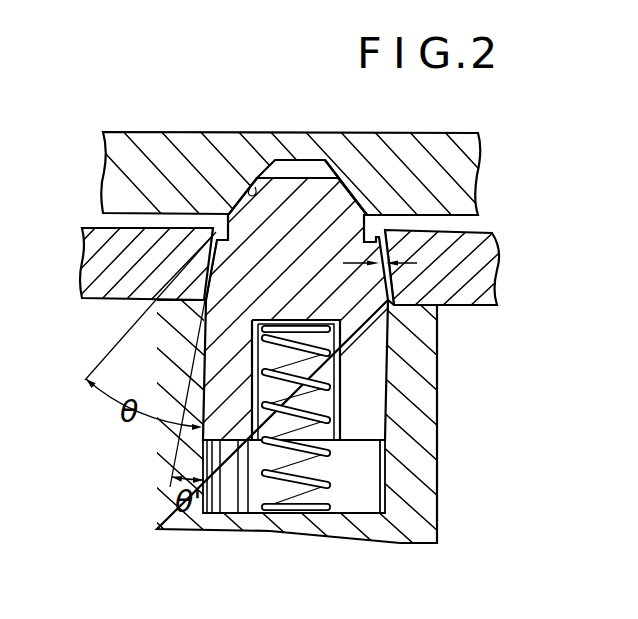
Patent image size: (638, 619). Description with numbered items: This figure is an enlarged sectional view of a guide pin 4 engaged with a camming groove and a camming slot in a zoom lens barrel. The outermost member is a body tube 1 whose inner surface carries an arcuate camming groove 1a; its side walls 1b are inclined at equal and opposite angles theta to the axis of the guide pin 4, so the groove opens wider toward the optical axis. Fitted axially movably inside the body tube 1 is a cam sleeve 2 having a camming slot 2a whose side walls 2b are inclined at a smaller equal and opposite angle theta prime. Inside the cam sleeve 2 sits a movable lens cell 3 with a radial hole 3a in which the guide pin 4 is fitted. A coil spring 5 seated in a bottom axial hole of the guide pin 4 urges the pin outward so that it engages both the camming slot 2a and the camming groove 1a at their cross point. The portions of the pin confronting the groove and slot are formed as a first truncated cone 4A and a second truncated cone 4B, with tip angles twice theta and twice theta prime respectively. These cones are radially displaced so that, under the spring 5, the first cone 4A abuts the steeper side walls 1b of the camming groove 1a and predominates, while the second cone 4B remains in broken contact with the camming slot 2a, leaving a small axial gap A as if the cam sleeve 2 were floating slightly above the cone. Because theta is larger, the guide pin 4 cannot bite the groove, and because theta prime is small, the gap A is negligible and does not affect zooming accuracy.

The body tube 1 is at (433, 146).
The camming groove 1a is at (297, 168).
The side walls of camming groove 1b is at (318, 166).
The cam sleeve 2 is at (475, 298).
The camming slot 2a is at (376, 236).
The side walls of camming slot 2b is at (391, 279).
The lens cell 3 is at (410, 520).
The radial hole 3a is at (368, 478).
The guide pin 4 is at (375, 398).
The first truncated cone 4A is at (251, 186).
The second truncated cone 4B is at (213, 263).
The coil spring 5 is at (318, 476).
The gap A is at (495, 241).